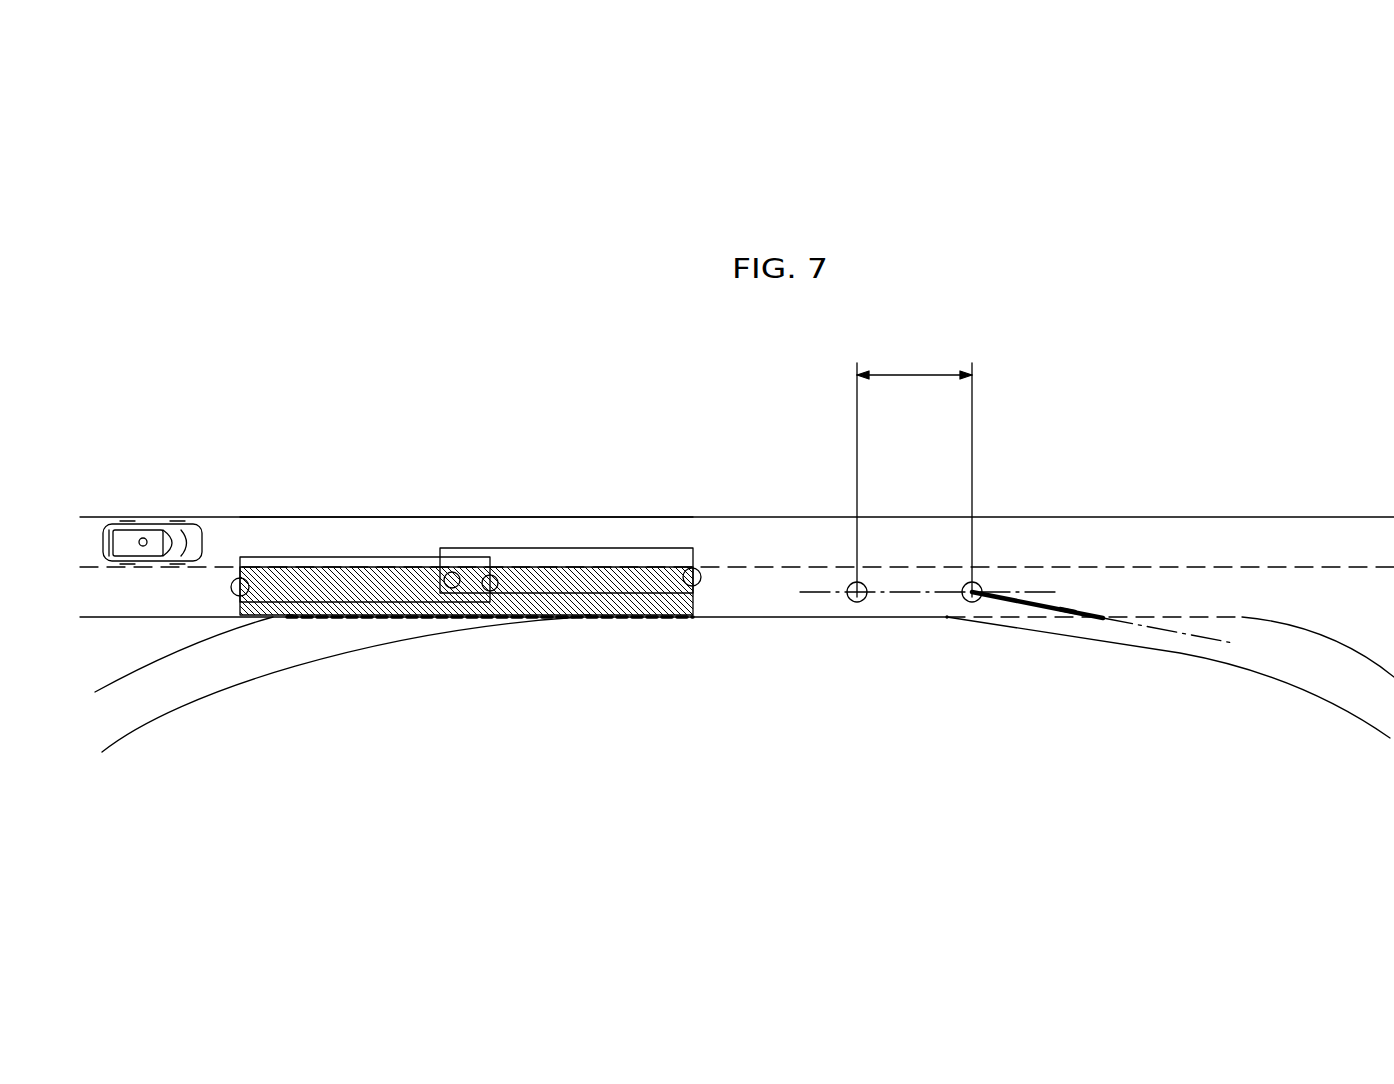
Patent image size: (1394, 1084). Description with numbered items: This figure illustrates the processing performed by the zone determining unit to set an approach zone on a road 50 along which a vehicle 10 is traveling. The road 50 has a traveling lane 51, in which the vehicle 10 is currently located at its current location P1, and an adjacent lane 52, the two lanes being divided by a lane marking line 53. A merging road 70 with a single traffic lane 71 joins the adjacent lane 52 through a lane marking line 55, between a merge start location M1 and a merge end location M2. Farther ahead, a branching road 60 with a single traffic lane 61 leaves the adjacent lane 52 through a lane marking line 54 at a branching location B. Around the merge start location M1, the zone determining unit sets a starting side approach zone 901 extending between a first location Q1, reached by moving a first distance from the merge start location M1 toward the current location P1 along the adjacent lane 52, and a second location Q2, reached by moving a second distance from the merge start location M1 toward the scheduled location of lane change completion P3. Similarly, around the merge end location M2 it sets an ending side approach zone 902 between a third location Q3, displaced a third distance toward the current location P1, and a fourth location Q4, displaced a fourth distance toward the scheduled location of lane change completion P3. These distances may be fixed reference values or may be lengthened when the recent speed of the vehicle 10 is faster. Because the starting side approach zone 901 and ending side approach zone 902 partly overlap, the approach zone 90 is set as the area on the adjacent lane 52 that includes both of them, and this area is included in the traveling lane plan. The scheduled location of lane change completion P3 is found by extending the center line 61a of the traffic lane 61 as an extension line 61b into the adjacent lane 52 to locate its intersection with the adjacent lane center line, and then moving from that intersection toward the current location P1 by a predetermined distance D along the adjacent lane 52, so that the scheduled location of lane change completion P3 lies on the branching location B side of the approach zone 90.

The vehicle 10 is at (123, 523).
The current location P1 is at (142, 537).
The road 50 is at (424, 510).
The traveling lane 51 is at (1311, 556).
The adjacent lane 52 is at (1311, 608).
The lane marking line 53 is at (1357, 567).
The lane marking line 54 is at (1197, 617).
The lane marking line 55 is at (397, 617).
The branching road 60 is at (1283, 688).
The traffic lane 61 is at (1356, 678).
The center line 61a is at (1190, 637).
The extension line 61b is at (1067, 607).
The merging road 70 is at (266, 682).
The traffic lane 71 is at (263, 663).
The approach zone 90 is at (663, 617).
The starting side approach zone 901 is at (270, 557).
The ending side approach zone 902 is at (582, 548).
The first location Q1 is at (231, 587).
The second location Q2 is at (490, 575).
The third location Q3 is at (452, 572).
The fourth location Q4 is at (701, 580).
The merge start location M1 is at (290, 617).
The merge end location M2 is at (588, 617).
The scheduled location of lane change completion P3 is at (852, 584).
The predetermined distance D is at (914, 469).
The branching location B is at (943, 618).